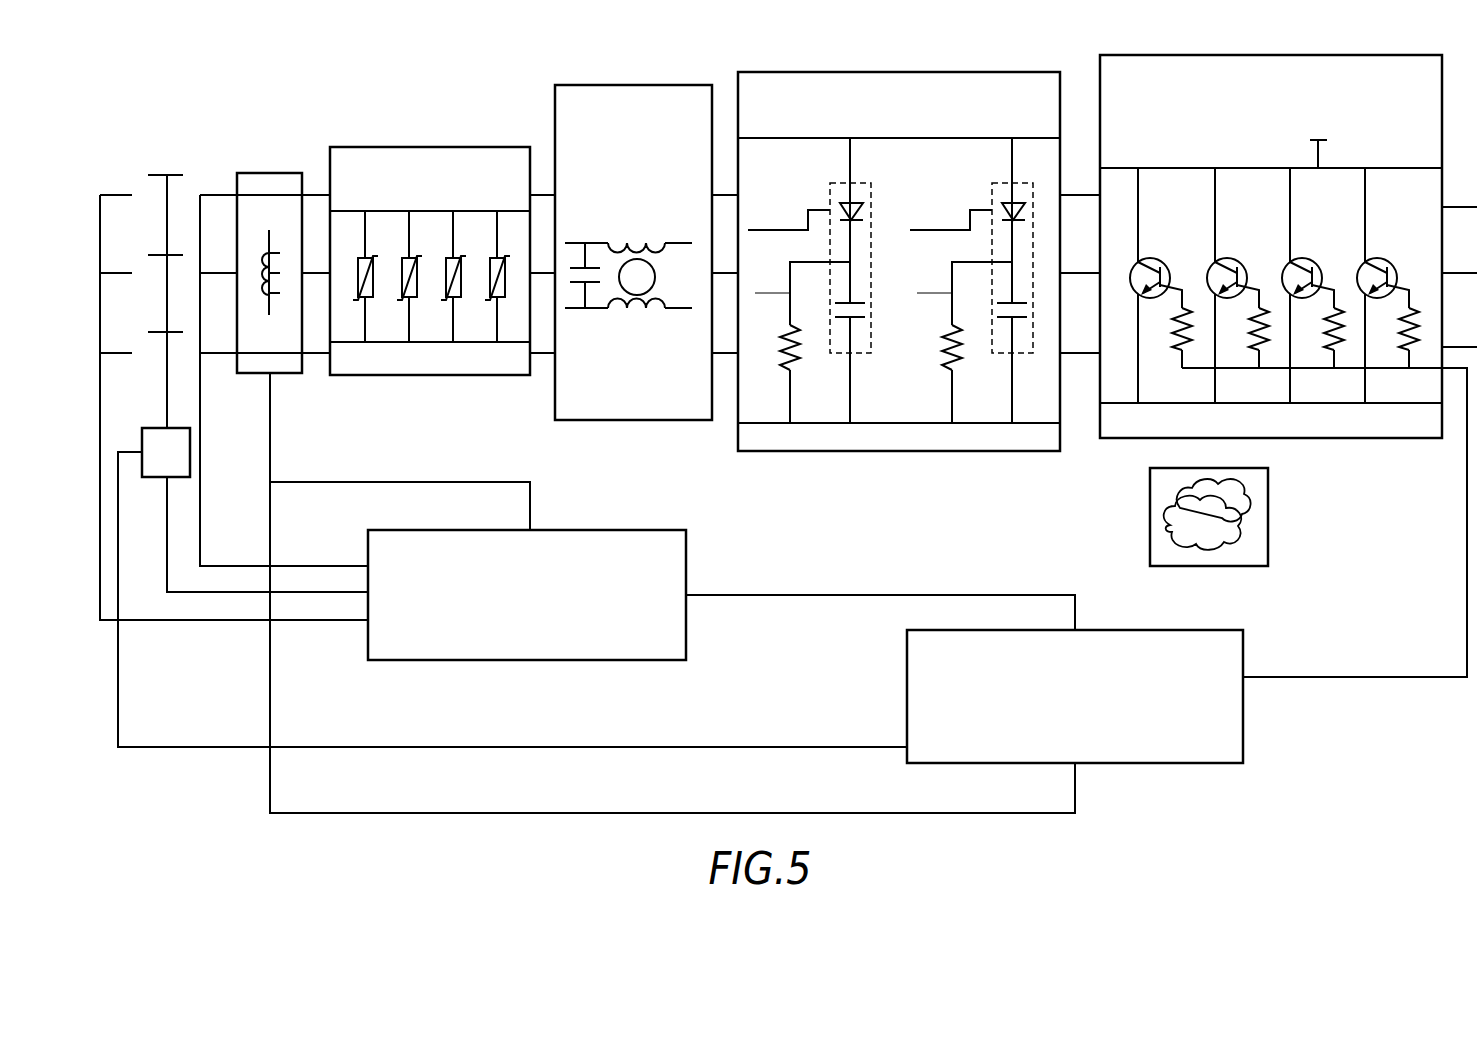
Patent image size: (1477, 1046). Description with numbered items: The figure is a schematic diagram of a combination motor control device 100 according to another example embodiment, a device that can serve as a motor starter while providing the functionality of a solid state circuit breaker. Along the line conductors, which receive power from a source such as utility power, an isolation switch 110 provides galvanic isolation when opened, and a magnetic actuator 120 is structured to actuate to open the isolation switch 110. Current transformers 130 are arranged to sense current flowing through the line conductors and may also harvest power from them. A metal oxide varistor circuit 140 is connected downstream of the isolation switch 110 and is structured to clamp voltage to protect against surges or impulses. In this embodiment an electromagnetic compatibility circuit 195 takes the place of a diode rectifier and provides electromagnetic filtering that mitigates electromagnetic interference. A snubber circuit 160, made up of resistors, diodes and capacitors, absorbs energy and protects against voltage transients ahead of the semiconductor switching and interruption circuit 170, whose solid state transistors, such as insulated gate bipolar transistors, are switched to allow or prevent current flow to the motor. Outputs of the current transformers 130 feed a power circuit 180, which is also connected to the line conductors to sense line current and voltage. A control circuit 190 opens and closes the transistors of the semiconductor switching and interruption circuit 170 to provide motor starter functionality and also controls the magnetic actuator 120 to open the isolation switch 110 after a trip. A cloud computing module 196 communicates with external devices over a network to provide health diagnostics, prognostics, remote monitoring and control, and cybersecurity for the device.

The combination motor control device 100 is at (250, 43).
The isolation switch 110 is at (208, 166).
The magnetic actuator 120 is at (157, 428).
The current transformers 130 is at (283, 374).
The metal oxide varistor (MOV) circuit 140 is at (430, 376).
The electromagnetic compatibility (EMC) circuit 195 is at (625, 85).
The snubber circuit 160 is at (890, 452).
The semiconductor switching and interruption circuit 170 is at (1418, 440).
The cloud computing module 196 is at (1283, 528).
The power circuit 180 is at (497, 661).
The control circuit 190 is at (1243, 730).